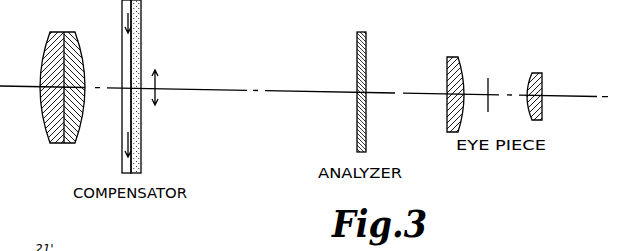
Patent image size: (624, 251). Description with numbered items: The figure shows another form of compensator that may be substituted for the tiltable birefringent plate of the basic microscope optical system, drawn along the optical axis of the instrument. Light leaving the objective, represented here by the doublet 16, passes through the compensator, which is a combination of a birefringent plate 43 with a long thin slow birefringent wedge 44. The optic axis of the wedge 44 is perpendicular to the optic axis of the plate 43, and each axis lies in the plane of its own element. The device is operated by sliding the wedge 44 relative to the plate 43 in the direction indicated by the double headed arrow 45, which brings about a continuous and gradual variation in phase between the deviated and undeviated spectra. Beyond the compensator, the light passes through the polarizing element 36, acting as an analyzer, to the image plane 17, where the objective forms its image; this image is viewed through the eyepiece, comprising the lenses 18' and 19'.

The doublet 16 is at (62, 32).
The birefringent plate 43 is at (122, 118).
The birefringent wedge 44 is at (141, 41).
The double headed arrow 45 is at (158, 88).
The polarizing element 36 is at (366, 38).
The eyepiece lens 18' is at (461, 76).
The image plane 17 is at (488, 80).
The eyepiece lens 19' is at (541, 85).